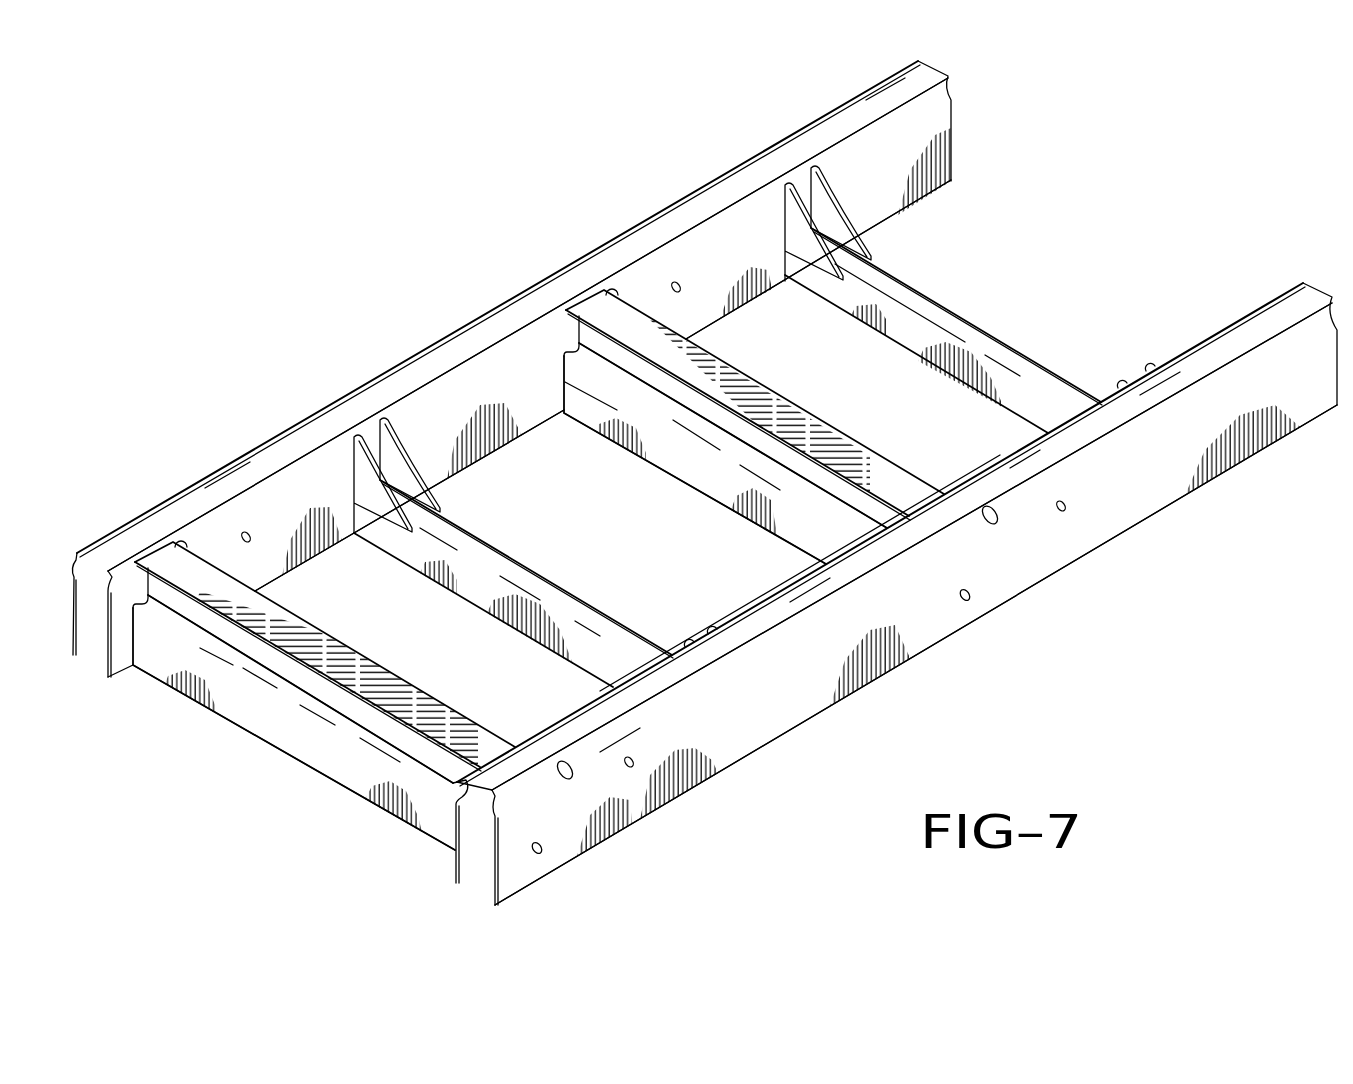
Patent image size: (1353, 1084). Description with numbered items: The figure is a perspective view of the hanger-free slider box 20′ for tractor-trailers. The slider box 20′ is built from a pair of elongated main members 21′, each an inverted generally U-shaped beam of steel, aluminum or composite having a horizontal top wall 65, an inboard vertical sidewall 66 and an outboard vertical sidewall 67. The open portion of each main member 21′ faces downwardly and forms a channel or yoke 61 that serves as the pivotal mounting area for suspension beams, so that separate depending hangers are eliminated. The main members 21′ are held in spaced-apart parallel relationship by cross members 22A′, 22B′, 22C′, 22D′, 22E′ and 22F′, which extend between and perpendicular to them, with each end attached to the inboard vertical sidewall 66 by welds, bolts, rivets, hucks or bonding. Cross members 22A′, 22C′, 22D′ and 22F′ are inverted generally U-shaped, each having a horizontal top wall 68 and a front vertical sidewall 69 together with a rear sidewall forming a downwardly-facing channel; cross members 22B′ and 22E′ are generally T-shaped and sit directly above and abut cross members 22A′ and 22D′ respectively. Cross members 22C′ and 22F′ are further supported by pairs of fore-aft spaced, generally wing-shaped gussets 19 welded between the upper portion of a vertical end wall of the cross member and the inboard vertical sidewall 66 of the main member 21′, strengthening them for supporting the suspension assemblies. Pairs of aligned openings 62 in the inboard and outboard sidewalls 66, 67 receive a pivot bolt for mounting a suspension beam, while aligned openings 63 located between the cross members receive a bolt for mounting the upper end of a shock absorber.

The slider box 20′ is at (1112, 188).
The main member 21′ is at (962, 128).
The cross member 22A′ is at (256, 737).
The cross member 22B′ is at (374, 645).
The cross member 22C′ is at (542, 558).
The cross member 22D′ is at (658, 471).
The cross member 22E′ is at (822, 401).
The cross member 22F′ is at (952, 299).
The gusset 19 is at (426, 498).
The downwardly-facing channel 61 is at (106, 676).
The opening 62 is at (968, 598).
The opening 63 is at (676, 285).
The horizontal top wall 65 is at (377, 404).
The inboard vertical sidewall 66 is at (440, 420).
The outboard vertical sidewall 67 is at (750, 700).
The horizontal top wall 68 is at (340, 720).
The front vertical sidewall 69 is at (378, 770).